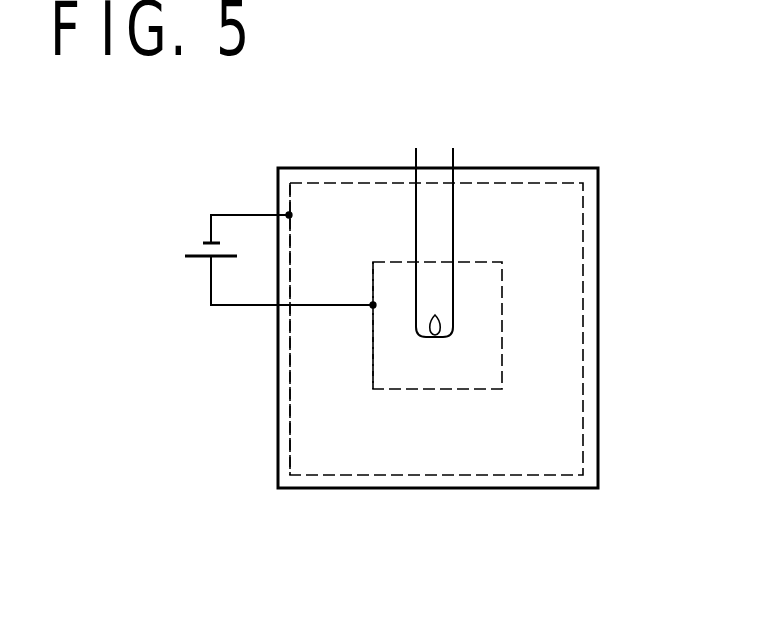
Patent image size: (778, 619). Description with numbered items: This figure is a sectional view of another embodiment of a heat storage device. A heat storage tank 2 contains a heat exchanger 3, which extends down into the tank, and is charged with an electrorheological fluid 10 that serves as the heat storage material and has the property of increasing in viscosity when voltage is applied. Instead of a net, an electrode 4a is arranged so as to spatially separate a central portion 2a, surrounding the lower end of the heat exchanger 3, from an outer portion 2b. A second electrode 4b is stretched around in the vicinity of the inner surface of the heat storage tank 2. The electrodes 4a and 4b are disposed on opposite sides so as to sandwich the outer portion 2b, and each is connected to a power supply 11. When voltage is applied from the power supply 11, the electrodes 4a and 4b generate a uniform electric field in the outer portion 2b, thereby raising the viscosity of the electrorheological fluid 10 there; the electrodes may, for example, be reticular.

The heat storage tank 2 is at (598, 298).
The central portion 2a is at (483, 357).
The outer portion 2b is at (558, 424).
The heat exchanger 3 is at (453, 158).
The electrode 4a is at (373, 370).
The electrode 4b is at (290, 448).
The electrorheological fluid 10 is at (568, 208).
The power supply 11 is at (195, 260).